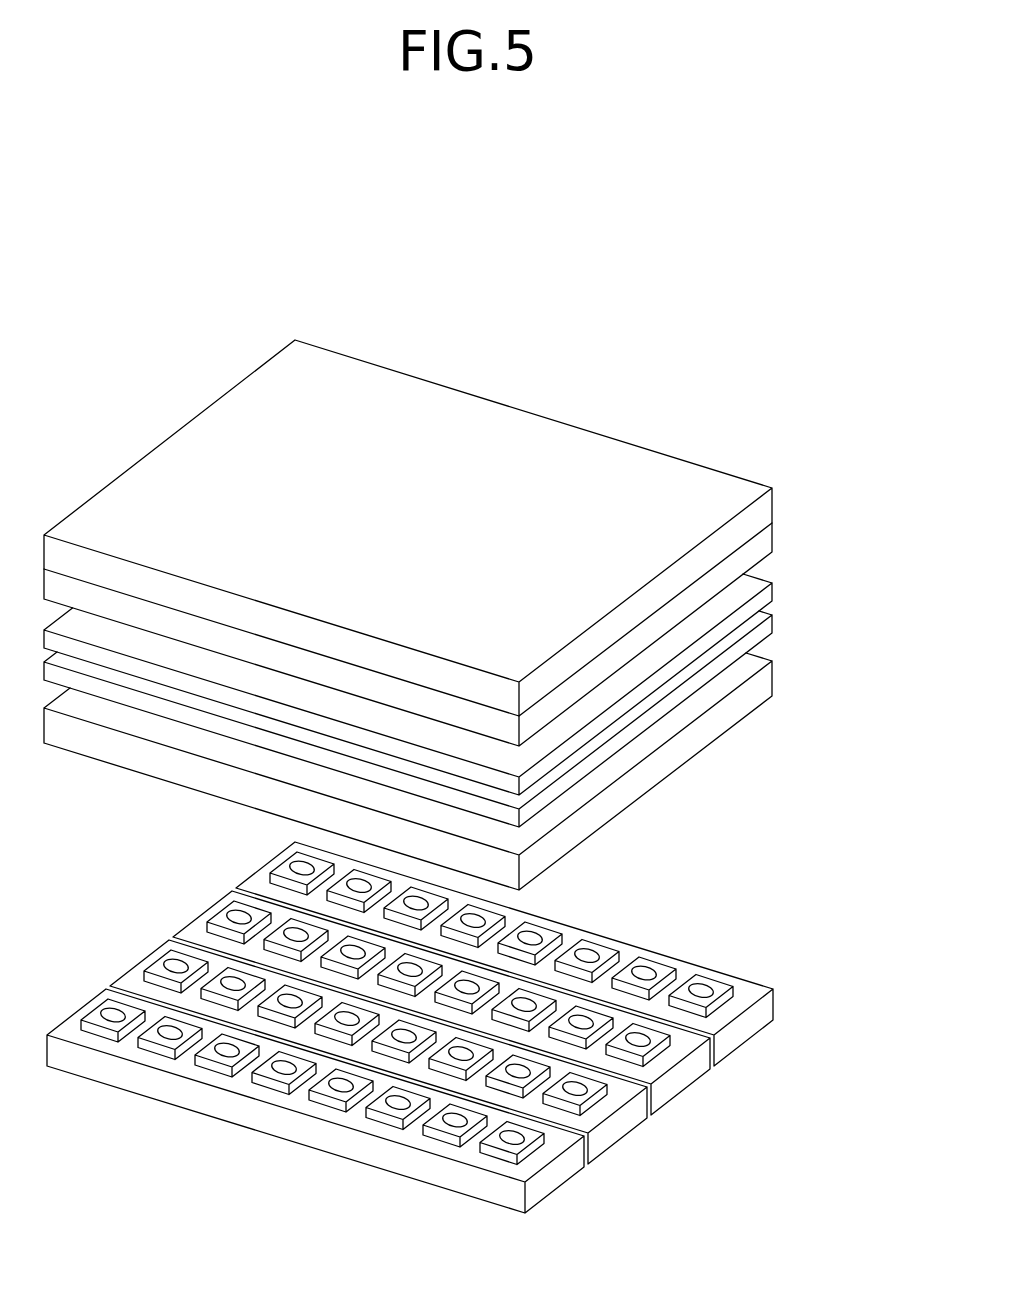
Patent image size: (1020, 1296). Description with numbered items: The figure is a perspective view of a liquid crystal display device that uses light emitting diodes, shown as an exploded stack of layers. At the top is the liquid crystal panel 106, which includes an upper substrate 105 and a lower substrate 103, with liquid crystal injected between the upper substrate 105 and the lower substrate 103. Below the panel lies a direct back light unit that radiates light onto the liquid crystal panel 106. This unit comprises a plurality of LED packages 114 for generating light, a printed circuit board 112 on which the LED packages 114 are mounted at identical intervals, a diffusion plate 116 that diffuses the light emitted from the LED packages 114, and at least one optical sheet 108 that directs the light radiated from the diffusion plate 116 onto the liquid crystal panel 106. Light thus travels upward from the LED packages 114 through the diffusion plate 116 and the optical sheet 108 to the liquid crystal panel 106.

The upper substrate 105 is at (772, 505).
The lower substrate 103 is at (772, 538).
The liquid crystal panel 106 is at (480, 543).
The optical sheet 108 is at (772, 592).
The diffusion plate 116 is at (772, 680).
The printed circuit board 112 is at (775, 1003).
The LED packages 114 is at (716, 978).